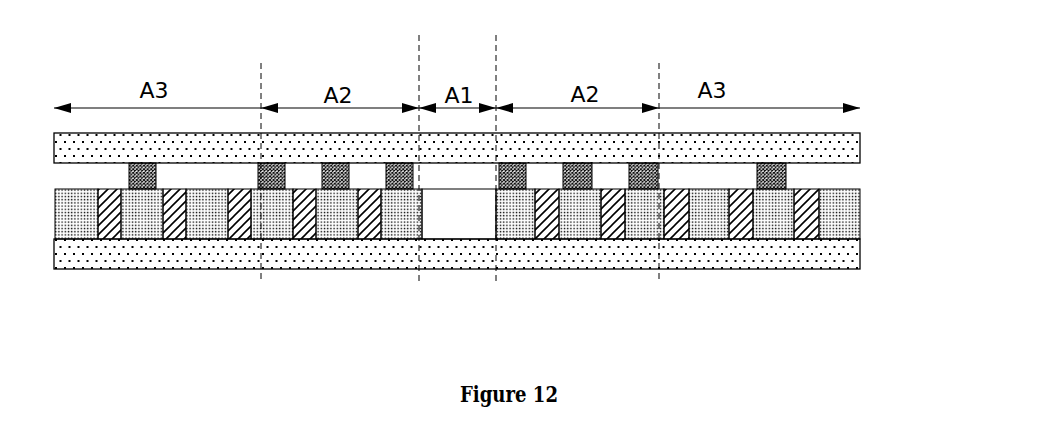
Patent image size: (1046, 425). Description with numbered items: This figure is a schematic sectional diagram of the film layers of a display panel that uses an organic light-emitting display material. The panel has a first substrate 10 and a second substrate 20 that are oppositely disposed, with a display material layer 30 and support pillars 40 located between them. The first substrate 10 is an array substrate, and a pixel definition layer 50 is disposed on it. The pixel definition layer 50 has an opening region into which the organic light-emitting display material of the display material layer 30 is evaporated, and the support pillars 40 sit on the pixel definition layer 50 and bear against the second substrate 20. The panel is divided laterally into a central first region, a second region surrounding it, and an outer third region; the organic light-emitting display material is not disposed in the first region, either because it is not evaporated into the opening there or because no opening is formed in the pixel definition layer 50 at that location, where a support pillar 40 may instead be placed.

The first substrate 10 is at (860, 257).
The second substrate 20 is at (860, 155).
The display material layer 30 is at (803, 219).
The support pillars 40 is at (776, 163).
The pixel definition layer 50 is at (853, 221).